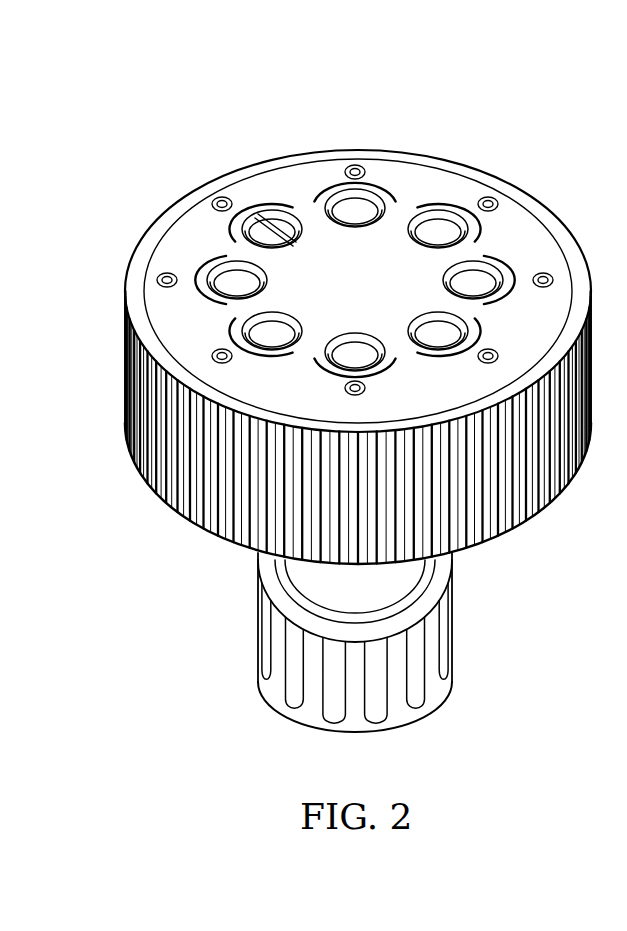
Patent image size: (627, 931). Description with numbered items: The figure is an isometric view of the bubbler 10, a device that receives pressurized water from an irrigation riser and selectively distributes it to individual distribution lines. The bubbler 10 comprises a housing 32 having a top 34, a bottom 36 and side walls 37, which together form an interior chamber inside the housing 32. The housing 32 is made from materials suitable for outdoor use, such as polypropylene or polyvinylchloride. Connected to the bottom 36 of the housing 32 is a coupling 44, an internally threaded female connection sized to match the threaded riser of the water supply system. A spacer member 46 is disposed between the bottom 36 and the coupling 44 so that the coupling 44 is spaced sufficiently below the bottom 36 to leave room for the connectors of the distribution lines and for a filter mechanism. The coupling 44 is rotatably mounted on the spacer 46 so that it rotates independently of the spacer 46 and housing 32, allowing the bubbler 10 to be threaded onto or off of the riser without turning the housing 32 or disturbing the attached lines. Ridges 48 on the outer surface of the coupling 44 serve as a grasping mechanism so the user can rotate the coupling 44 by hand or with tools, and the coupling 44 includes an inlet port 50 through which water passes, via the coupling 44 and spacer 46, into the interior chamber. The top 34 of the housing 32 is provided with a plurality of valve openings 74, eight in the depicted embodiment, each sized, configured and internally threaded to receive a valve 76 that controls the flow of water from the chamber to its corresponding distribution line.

The bubbler 10 is at (474, 97).
The housing 32 is at (147, 415).
The top 34 is at (432, 178).
The bottom 36 is at (514, 538).
The side walls 37 is at (175, 487).
The coupling 44 is at (459, 643).
The spacer member 46 is at (317, 582).
The ridges 48 is at (267, 655).
The inlet port 50 is at (393, 729).
The valve openings 74 is at (472, 292).
The valve 76 is at (281, 213).